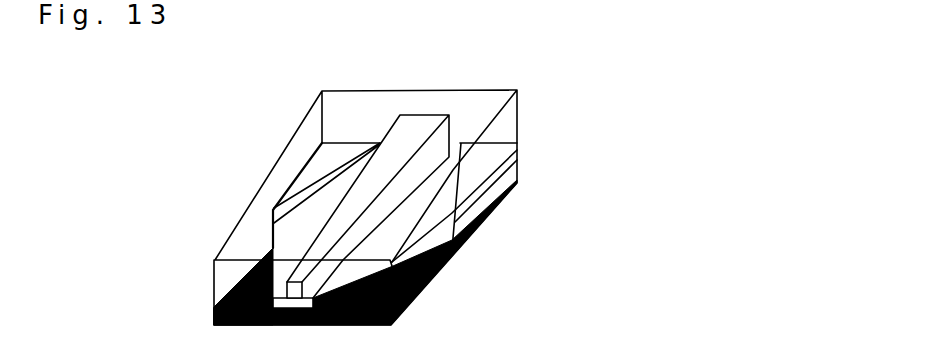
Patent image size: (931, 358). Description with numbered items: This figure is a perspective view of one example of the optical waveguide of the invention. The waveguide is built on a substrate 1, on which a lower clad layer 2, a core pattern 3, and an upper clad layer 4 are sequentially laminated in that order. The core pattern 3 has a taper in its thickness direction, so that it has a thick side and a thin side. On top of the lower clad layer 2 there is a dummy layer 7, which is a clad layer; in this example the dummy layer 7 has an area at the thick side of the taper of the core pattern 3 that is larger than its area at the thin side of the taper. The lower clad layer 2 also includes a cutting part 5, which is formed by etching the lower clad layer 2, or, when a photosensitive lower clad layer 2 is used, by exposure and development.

The substrate 1 is at (520, 181).
The lower clad layer 2 is at (508, 173).
The core pattern 3 is at (410, 122).
The upper clad layer 4 is at (290, 173).
The cutting part 5 is at (238, 263).
The dummy layer 7 is at (485, 160).